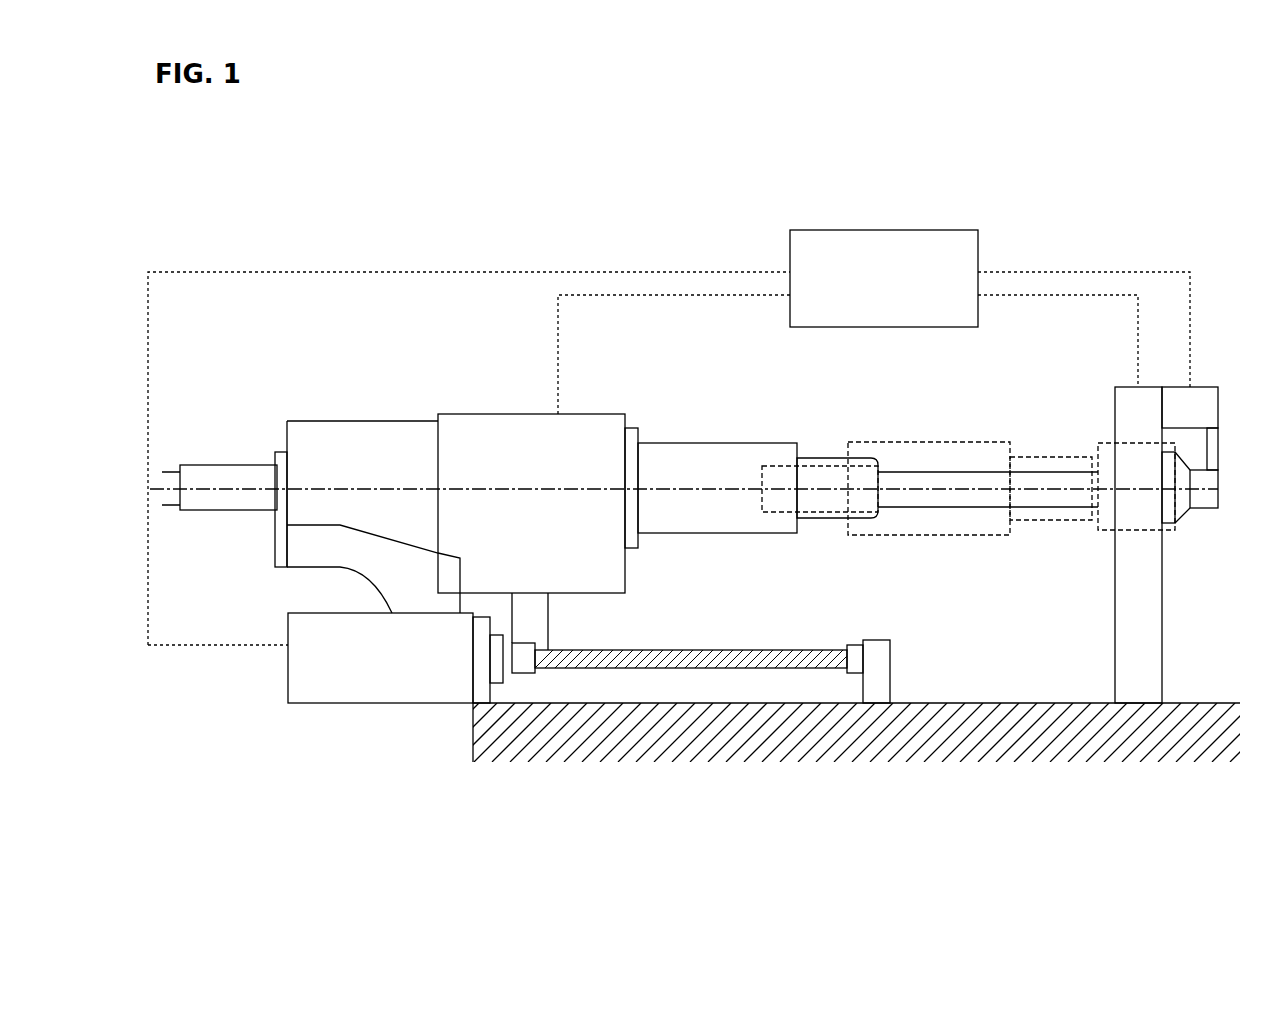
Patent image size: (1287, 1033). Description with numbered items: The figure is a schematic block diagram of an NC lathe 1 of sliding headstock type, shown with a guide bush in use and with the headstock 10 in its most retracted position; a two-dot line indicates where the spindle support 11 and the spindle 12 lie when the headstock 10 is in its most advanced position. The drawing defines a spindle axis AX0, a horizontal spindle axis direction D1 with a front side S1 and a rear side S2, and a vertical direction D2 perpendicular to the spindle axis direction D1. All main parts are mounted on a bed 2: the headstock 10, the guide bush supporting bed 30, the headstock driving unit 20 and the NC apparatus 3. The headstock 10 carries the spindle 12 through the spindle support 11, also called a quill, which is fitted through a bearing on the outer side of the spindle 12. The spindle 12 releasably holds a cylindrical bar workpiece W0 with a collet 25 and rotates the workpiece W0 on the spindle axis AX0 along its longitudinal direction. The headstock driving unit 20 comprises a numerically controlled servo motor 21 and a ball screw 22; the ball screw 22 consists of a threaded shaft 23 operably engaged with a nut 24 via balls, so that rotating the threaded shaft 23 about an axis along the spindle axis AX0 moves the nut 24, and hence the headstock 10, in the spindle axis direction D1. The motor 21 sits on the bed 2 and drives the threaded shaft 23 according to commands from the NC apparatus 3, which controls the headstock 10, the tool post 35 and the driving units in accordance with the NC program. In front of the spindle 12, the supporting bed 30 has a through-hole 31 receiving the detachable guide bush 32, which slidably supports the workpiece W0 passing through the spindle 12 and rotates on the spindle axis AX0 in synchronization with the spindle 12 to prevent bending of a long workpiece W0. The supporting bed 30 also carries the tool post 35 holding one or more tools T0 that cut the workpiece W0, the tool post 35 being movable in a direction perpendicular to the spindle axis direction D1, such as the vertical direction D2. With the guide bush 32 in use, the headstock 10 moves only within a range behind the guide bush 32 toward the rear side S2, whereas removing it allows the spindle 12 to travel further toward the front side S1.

The lathe 1 is at (216, 243).
The bed 2 is at (943, 703).
The NC apparatus 3 is at (848, 322).
The headstock 10 is at (517, 453).
The spindle support 11 is at (742, 443).
The spindle 12 is at (838, 518).
The headstock driving unit 20 is at (384, 684).
The servo motor 21 is at (352, 663).
The ball screw 22 is at (596, 692).
The threaded shaft 23 is at (612, 650).
The nut 24 is at (528, 673).
The collet 25 is at (833, 457).
The guide bush supporting bed 30 is at (1162, 610).
The through-hole 31 is at (1173, 530).
The guide bush 32 is at (1098, 452).
The tool post 35 is at (1213, 387).
The spindle axis AX0 is at (425, 487).
The workpiece W0 is at (1045, 472).
The tool T0 is at (1221, 472).
The spindle axis direction D1 is at (797, 802).
The vertical direction D2 is at (968, 520).
The front side S1 is at (819, 805).
The rear side S2 is at (682, 805).